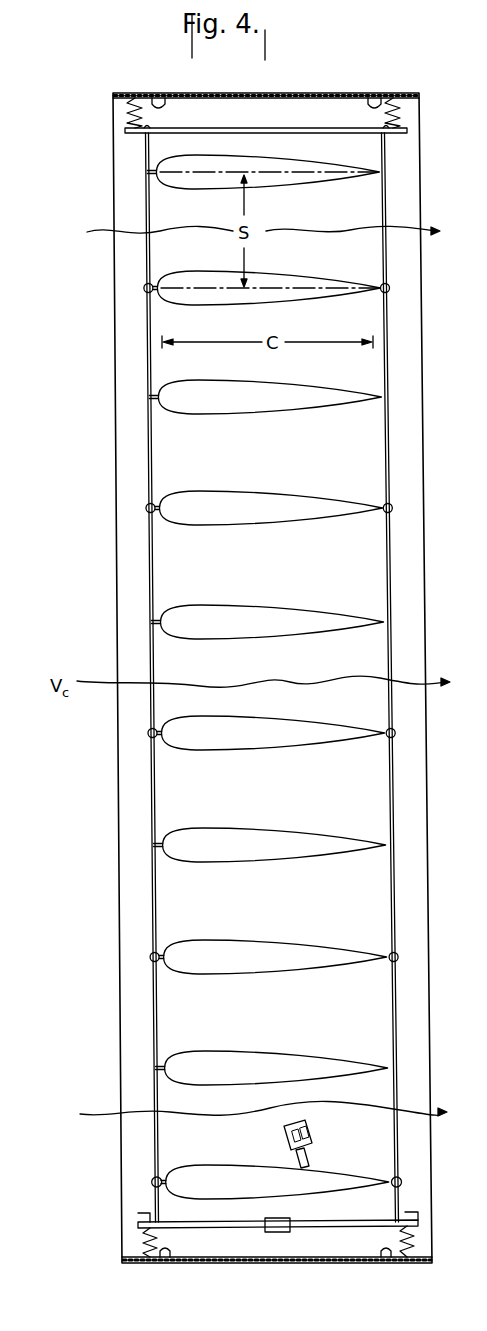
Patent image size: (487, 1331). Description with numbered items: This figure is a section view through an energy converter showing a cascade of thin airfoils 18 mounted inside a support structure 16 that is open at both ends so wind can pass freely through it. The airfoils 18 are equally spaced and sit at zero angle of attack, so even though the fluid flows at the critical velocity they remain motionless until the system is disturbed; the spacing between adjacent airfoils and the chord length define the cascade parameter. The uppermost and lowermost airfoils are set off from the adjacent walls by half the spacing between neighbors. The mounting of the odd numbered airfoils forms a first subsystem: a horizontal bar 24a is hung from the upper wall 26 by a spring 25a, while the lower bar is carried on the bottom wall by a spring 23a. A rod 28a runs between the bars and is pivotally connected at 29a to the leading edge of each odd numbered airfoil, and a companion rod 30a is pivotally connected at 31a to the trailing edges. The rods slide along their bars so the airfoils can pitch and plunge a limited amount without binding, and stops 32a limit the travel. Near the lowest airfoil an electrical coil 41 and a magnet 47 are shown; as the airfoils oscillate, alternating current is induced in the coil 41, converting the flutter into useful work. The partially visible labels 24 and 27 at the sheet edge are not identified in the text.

The support structure 16 is at (297, 92).
The airfoils 18 is at (375, 1182).
The spring 23a is at (141, 1235).
The horizontal bar 24a is at (302, 126).
The spring 25a is at (119, 110).
The rod 28a is at (160, 1138).
The pivotal connection 29a is at (151, 1182).
The rod 30a is at (399, 1140).
The pivotal connection 31a is at (402, 1182).
The stop 32a is at (193, 83).
The electrical coil 41 is at (312, 1154).
The magnet 47 is at (313, 1125).
The plate 24 is at (482, 70).
The upper wall 26 is at (482, 1139).
The wall 27 is at (482, 1216).